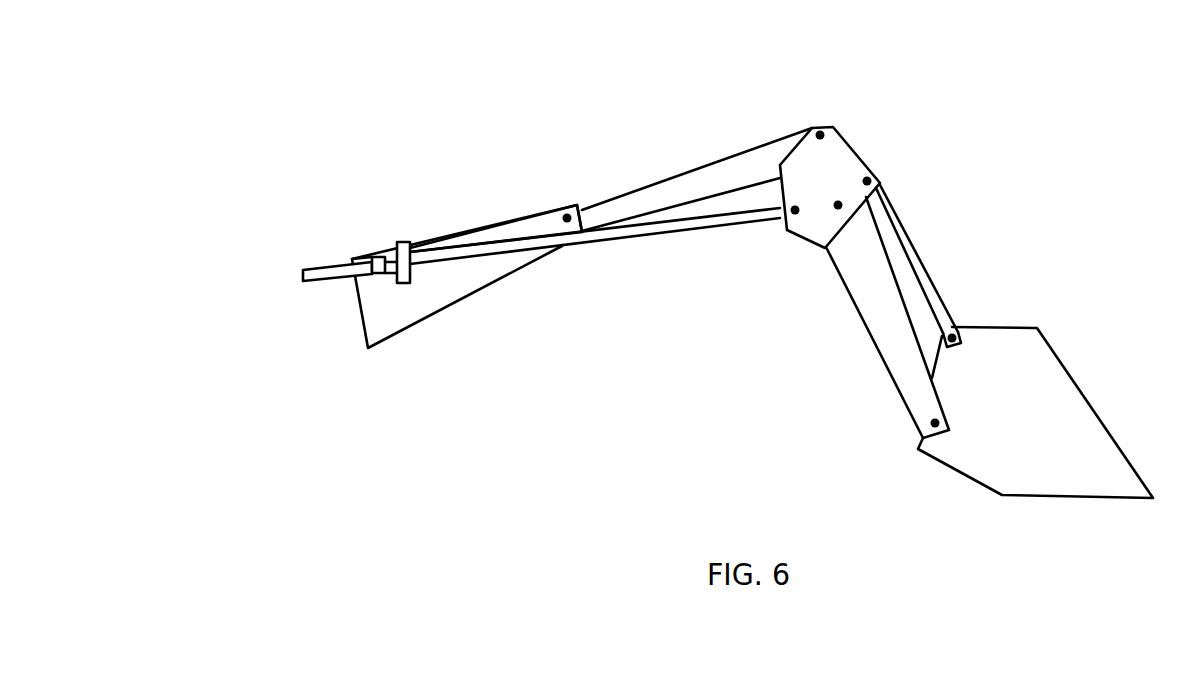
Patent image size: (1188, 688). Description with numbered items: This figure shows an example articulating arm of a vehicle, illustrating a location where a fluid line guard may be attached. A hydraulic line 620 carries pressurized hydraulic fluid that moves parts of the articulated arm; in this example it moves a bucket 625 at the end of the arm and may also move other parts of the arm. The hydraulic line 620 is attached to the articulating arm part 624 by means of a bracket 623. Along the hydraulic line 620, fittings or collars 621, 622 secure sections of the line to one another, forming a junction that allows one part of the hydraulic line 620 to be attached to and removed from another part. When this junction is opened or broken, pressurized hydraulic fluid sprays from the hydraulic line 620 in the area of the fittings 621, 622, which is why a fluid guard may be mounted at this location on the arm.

The hydraulic line 620 is at (335, 264).
The fitting or collar 621 is at (373, 277).
The fitting or collar 622 is at (382, 256).
The bracket 623 is at (405, 283).
The articulating arm part 624 is at (530, 213).
The bucket 625 is at (1080, 385).